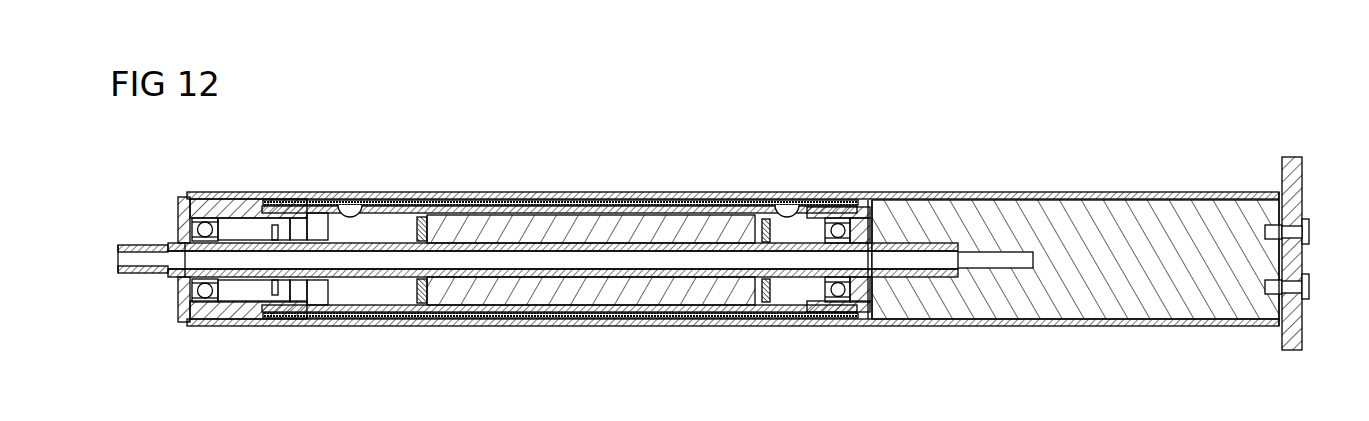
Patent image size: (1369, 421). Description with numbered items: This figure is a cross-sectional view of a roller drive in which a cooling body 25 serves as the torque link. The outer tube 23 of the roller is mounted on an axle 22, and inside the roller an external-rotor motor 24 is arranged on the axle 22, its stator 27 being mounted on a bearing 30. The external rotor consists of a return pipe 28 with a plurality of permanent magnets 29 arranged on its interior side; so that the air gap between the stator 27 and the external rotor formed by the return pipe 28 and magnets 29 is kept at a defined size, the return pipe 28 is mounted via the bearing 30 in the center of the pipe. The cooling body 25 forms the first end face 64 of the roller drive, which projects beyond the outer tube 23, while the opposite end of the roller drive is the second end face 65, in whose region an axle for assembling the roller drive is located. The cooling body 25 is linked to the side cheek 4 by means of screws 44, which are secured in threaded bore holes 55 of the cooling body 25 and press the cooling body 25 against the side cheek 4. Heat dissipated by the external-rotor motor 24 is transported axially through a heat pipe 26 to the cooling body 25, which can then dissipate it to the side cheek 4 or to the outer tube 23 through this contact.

The side cheek 4 is at (1302, 185).
The axle 22 is at (148, 243).
The outer tube 23 is at (312, 192).
The external-rotor motor 24 is at (412, 218).
The cooling body 25 is at (1067, 245).
The heat pipe 26 is at (487, 258).
The stator 27 is at (553, 228).
The return pipe 28 is at (358, 205).
The permanent magnets 29 is at (590, 208).
The bearing 30 is at (840, 228).
The screws 44 is at (1310, 232).
The threaded bore holes 55 is at (1268, 225).
The end face 64 is at (1270, 176).
The second end face 65 is at (117, 297).